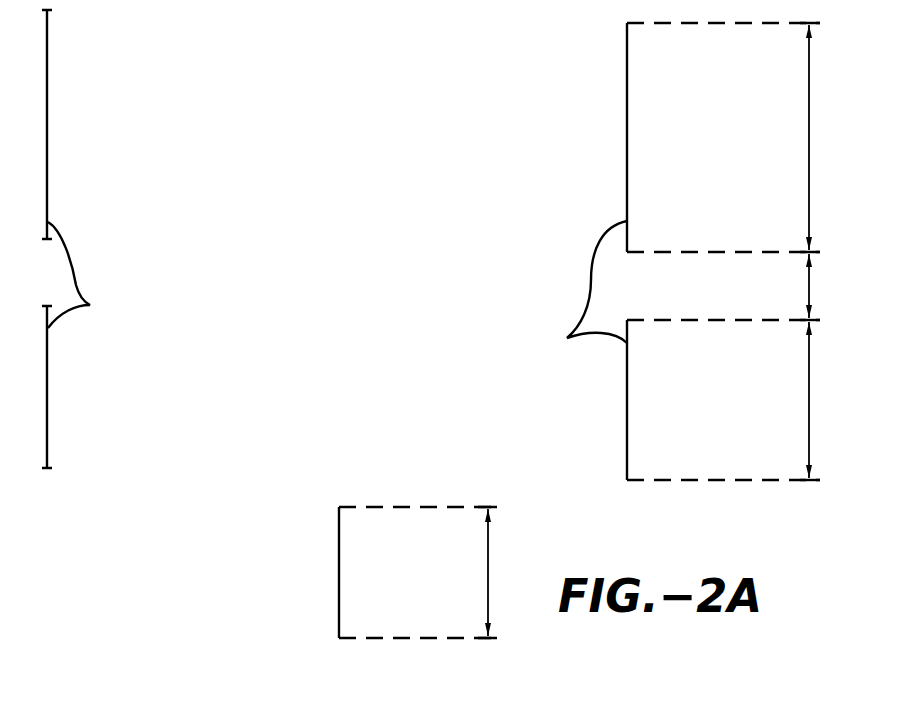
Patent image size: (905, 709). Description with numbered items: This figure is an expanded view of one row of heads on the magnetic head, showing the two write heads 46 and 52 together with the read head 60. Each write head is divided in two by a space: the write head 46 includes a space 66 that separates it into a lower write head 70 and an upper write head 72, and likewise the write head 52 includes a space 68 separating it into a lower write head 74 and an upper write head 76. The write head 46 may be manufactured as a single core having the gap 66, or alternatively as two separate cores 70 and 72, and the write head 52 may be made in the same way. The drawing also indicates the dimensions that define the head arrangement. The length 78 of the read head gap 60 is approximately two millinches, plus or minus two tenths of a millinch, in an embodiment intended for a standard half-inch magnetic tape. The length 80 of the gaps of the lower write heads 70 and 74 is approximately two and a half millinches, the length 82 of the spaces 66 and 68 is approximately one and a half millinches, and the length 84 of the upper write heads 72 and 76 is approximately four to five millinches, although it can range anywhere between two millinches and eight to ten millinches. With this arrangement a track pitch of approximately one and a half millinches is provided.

The write head 46 is at (584, 287).
The write head 52 is at (86, 275).
The read head 60 is at (338, 564).
The space 66 is at (630, 286).
The space 68 is at (44, 278).
The lower write head 70 is at (628, 442).
The upper write head 72 is at (628, 47).
The lower write head 74 is at (48, 438).
The upper write head 76 is at (48, 44).
The length of the read head gap 78 is at (490, 576).
The length of the gaps of the lower write heads 80 is at (808, 416).
The length of the spaces 82 is at (808, 290).
The length of the upper write heads 84 is at (808, 128).